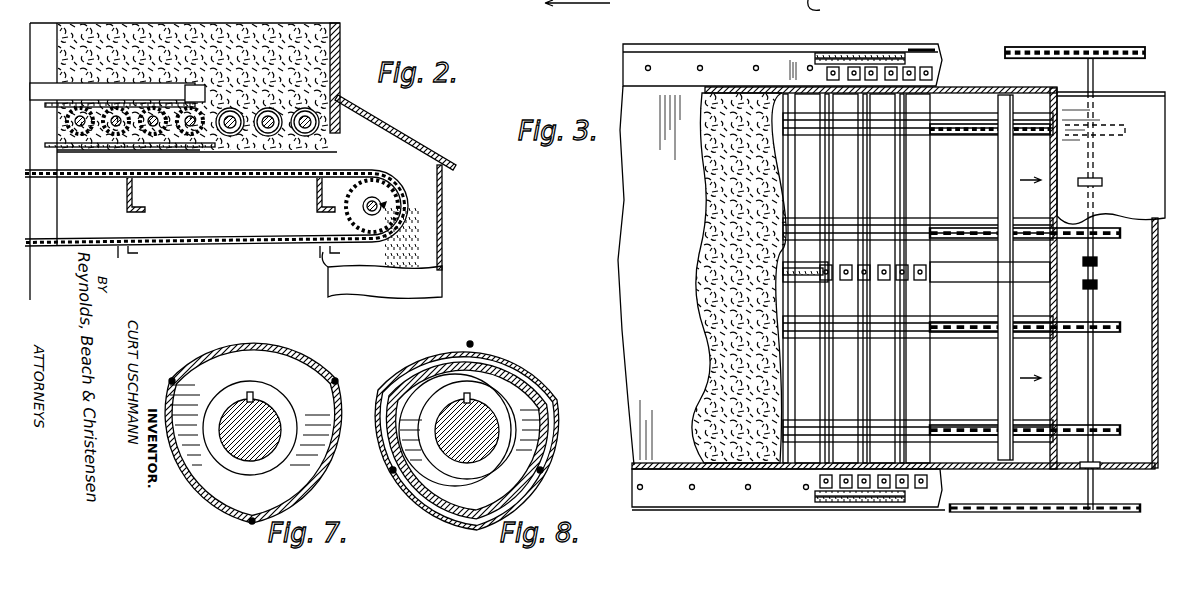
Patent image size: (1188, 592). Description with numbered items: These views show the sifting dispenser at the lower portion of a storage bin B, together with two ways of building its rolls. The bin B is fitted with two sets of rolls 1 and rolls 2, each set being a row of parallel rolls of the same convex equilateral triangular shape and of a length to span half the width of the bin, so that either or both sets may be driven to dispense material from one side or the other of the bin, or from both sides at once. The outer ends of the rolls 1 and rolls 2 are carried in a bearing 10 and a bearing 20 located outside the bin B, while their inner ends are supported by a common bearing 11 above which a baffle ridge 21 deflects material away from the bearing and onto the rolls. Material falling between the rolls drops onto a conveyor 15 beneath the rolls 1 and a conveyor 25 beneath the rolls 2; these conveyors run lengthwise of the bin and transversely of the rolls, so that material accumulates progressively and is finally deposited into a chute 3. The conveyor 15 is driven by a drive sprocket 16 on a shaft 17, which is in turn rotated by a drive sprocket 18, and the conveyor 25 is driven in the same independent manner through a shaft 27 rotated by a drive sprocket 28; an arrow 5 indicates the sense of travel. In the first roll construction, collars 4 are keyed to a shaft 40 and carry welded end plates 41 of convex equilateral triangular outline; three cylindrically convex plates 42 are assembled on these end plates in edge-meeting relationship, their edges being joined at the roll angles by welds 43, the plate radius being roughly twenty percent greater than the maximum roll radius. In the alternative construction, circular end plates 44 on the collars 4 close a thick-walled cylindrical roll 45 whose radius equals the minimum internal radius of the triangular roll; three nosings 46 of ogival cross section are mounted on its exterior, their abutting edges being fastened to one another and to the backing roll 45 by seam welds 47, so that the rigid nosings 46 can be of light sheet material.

In FIG. 2, the bin B is at (340, 35).
In FIG. 3, the bin B is at (675, 278).
In FIG. 2, the rolls 1 is at (300, 128).
In FIG. 3, the rolls 2 is at (880, 205).
In FIG. 2, the chute 3 is at (430, 282).
In FIG. 7, the collars 4 is at (270, 400).
In FIG. 8, the collars 4 is at (452, 468).
In FIG. 3, the direction arrow 5 is at (819, 9).
In FIG. 3, the bearing 10 is at (880, 490).
In FIG. 3, the bearing 11 is at (925, 270).
In FIG. 2, the conveyor 15 is at (190, 178).
In FIG. 3, the conveyor 15 is at (975, 333).
In FIG. 2, the drive sprocket 16 is at (385, 190).
In FIG. 2, the shaft 17 is at (378, 202).
In FIG. 3, the shaft 17 is at (1093, 487).
In FIG. 3, the drive sprocket 18 is at (1100, 512).
In FIG. 3, the bearing 20 is at (935, 74).
In FIG. 3, the baffle ridge 21 is at (805, 282).
In FIG. 3, the conveyor 25 is at (998, 172).
In FIG. 3, the shaft 27 is at (1097, 261).
In FIG. 3, the drive sprocket 28 is at (1068, 58).
In FIG. 7, the shaft 40 is at (238, 448).
In FIG. 8, the shaft 40 is at (476, 450).
In FIG. 7, the end plates 41 is at (290, 368).
In FIG. 7, the convex plates 42 is at (228, 340).
In FIG. 7, the welds 43 is at (172, 381).
In FIG. 8, the end plates 44 is at (512, 403).
In FIG. 8, the cylindrical roll 45 is at (497, 372).
In FIG. 8, the nosings 46 is at (412, 350).
In FIG. 8, the seam welds 47 is at (470, 344).